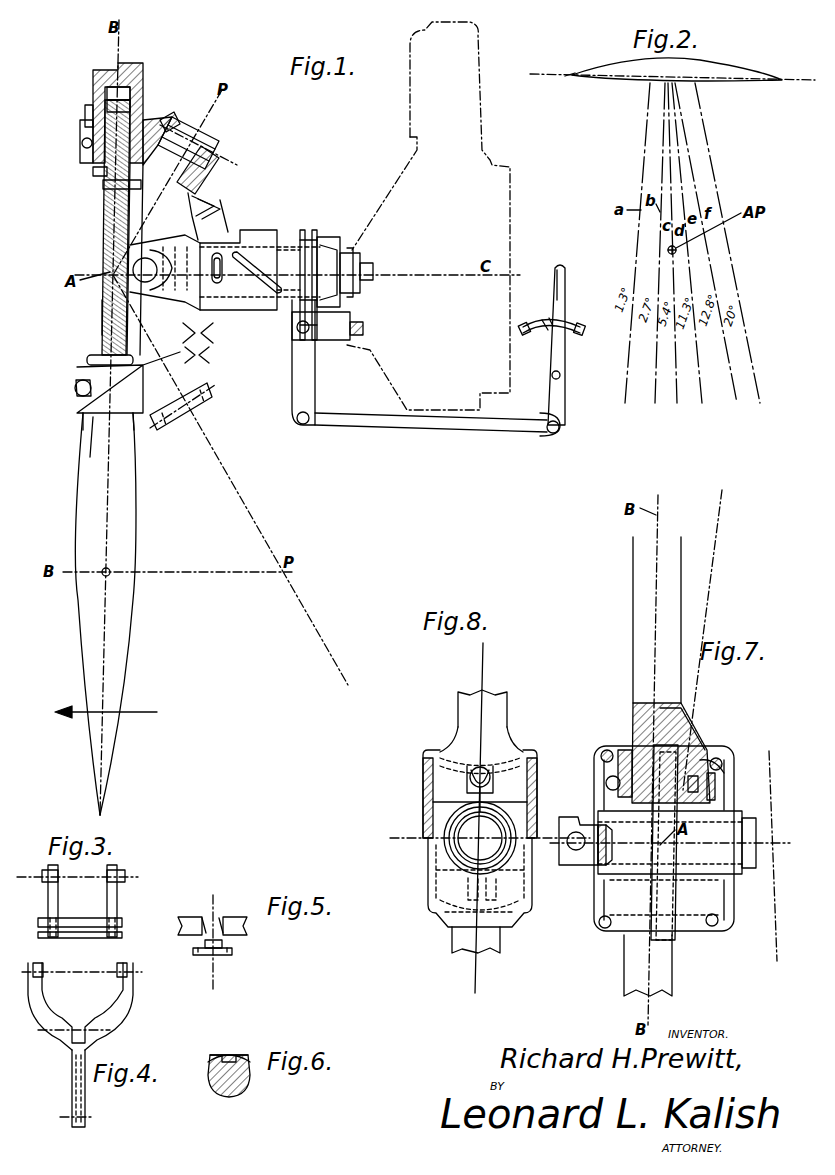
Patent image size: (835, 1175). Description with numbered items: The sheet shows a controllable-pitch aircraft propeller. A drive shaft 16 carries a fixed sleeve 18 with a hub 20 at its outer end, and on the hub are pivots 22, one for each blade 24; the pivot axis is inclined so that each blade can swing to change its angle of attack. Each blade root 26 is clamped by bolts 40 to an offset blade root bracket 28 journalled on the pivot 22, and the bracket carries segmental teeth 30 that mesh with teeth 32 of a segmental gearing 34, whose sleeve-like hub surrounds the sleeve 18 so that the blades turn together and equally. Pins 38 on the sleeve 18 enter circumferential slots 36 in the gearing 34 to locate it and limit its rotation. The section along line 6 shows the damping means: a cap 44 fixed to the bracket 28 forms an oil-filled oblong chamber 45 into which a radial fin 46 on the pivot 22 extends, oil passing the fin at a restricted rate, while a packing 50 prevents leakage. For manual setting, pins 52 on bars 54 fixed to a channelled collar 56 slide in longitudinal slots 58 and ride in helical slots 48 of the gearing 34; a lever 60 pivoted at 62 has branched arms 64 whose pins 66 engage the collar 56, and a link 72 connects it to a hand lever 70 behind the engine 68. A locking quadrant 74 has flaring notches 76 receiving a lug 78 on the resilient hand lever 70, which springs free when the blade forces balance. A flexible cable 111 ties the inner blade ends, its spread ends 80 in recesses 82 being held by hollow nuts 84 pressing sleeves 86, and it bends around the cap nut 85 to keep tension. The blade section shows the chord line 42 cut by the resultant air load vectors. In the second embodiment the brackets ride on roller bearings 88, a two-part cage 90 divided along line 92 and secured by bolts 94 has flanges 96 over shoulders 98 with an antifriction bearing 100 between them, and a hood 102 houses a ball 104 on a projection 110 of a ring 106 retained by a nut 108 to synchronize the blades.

In FIG. 1, the section line 6 is at (210, 390).
In FIG. 1, the drive shaft 16 is at (373, 275).
In FIG. 7, the drive shaft 16 is at (760, 870).
In FIG. 1, the sleeve 18 is at (332, 237).
In FIG. 7, the sleeve 18 is at (730, 811).
In FIG. 1, the hub 20 is at (110, 345).
In FIG. 1, the pivot 22 is at (218, 165).
In FIG. 6, the pivot 22 is at (225, 1097).
In FIG. 7, the pivot 22 is at (700, 800).
In FIG. 1, the blade 24 is at (128, 522).
In FIG. 2, the blade 24 is at (600, 66).
In FIG. 1, the blade root 26 is at (146, 110).
In FIG. 8, the blade root 26 is at (467, 700).
In FIG. 7, the blade root 26 is at (636, 702).
In FIG. 1, the blade root bracket 28 is at (224, 190).
In FIG. 7, the blade root bracket 28 is at (634, 725).
In FIG. 1, the teeth 30 is at (187, 312).
In FIG. 1, the teeth 32 is at (228, 202).
In FIG. 1, the segmental gearing 34 is at (238, 232).
In FIG. 1, the circumferential slot 36 is at (160, 258).
In FIG. 1, the pin 38 is at (190, 302).
In FIG. 1, the bolt 40 is at (80, 142).
In FIG. 2, the chord line 42 is at (570, 74).
In FIG. 1, the cap 44 is at (166, 122).
In FIG. 6, the cap 44 is at (210, 1058).
In FIG. 6, the oblong chamber 45 is at (229, 1055).
In FIG. 1, the radial fin 46 is at (192, 102).
In FIG. 6, the radial fin 46 is at (240, 1054).
In FIG. 1, the helical slot 48 is at (274, 300).
In FIG. 1, the packing 50 is at (103, 185).
In FIG. 1, the pin 52 is at (222, 283).
In FIG. 3, the pin 52 is at (46, 872).
In FIG. 3, the bar 54 is at (48, 900).
In FIG. 1, the collar 56 is at (305, 232).
In FIG. 3, the collar 56 is at (110, 932).
In FIG. 1, the longitudinal slot 58 is at (360, 258).
In FIG. 1, the lever 60 is at (292, 376).
In FIG. 4, the lever 60 is at (84, 1097).
In FIG. 1, the pivot 62 is at (310, 328).
In FIG. 4, the branched arms 64 is at (45, 1005).
In FIG. 4, the pin 66 is at (118, 975).
In FIG. 1, the engine 68 is at (505, 172).
In FIG. 1, the hand lever 70 is at (551, 372).
In FIG. 5, the hand lever 70 is at (216, 955).
In FIG. 1, the link 72 is at (378, 428).
In FIG. 1, the locking quadrant 74 is at (580, 331).
In FIG. 5, the locking quadrant 74 is at (232, 918).
In FIG. 1, the notch 76 is at (527, 323).
In FIG. 5, the notch 76 is at (211, 920).
In FIG. 1, the lug 78 is at (546, 332).
In FIG. 5, the lug 78 is at (232, 950).
In FIG. 1, the spread cable end 80 is at (121, 103).
In FIG. 1, the recess 82 is at (124, 88).
In FIG. 1, the hollow nut 84 is at (93, 170).
In FIG. 1, the cap nut 85 is at (112, 235).
In FIG. 1, the sleeve 86 is at (88, 115).
In FIG. 7, the roller bearing 88 is at (690, 745).
In FIG. 8, the cage 90 is at (427, 785).
In FIG. 7, the cage 90 is at (597, 900).
In FIG. 8, the dividing line 92 is at (488, 882).
In FIG. 7, the bolt 94 is at (601, 753).
In FIG. 8, the flange 96 is at (438, 752).
In FIG. 7, the flange 96 is at (620, 755).
In FIG. 7, the shoulder 98 is at (608, 780).
In FIG. 7, the antifriction bearing 100 is at (714, 760).
In FIG. 7, the hood 102 is at (598, 818).
In FIG. 8, the ball 104 is at (478, 767).
In FIG. 8, the ring 106 is at (492, 790).
In FIG. 7, the ring 106 is at (660, 820).
In FIG. 8, the nut 108 is at (505, 818).
In FIG. 7, the nut 108 is at (600, 815).
In FIG. 8, the projection 110 is at (446, 818).
In FIG. 1, the flexible cable 111 is at (100, 313).